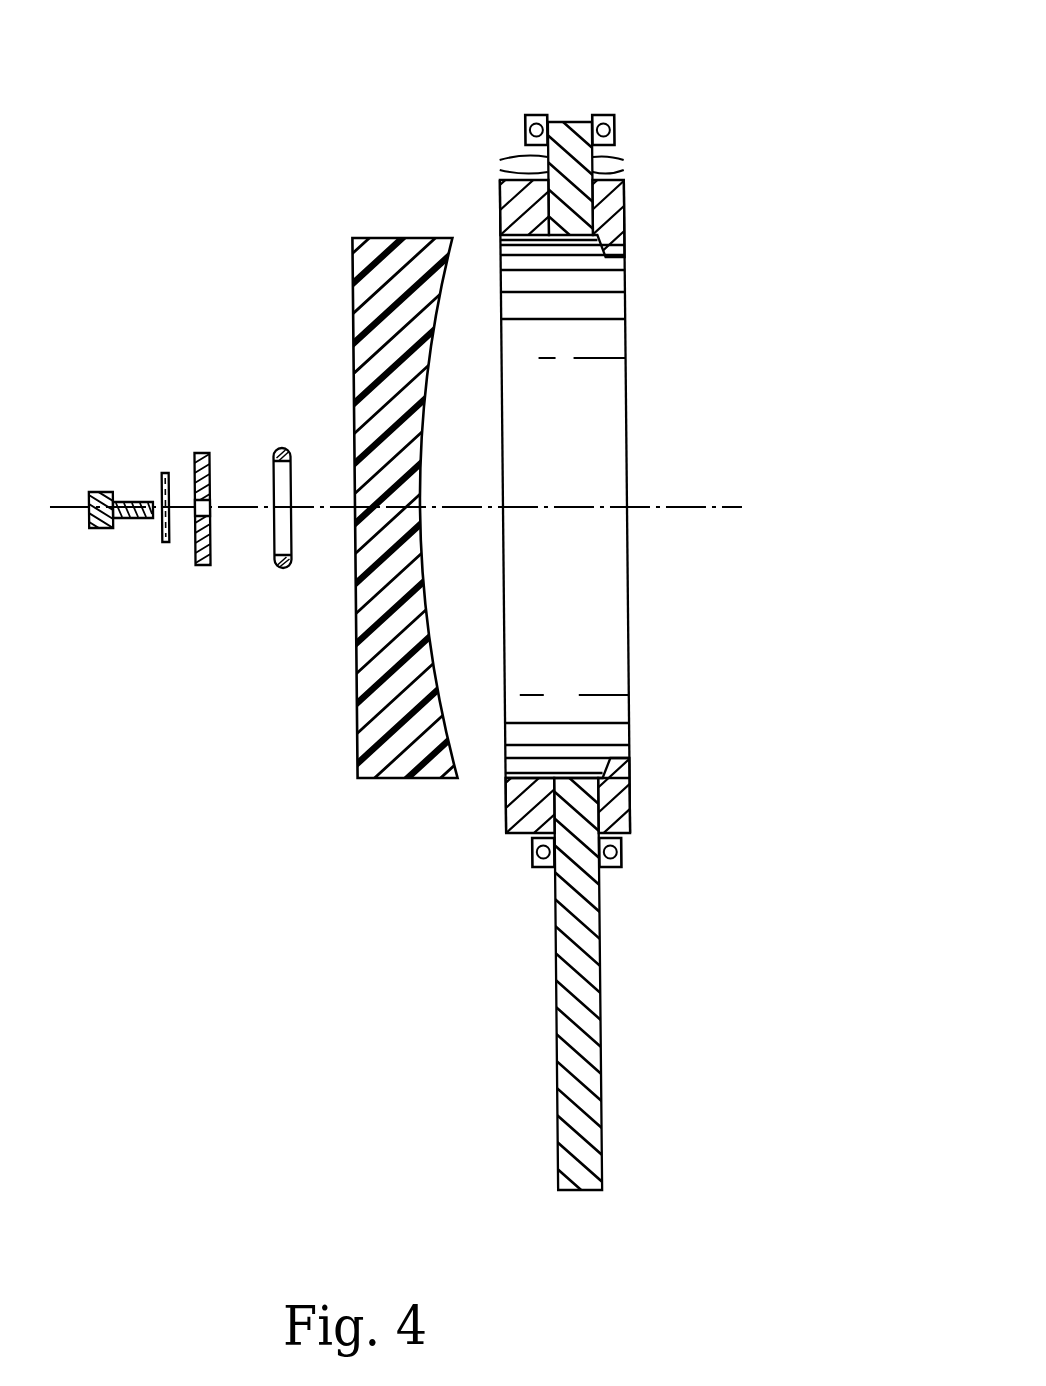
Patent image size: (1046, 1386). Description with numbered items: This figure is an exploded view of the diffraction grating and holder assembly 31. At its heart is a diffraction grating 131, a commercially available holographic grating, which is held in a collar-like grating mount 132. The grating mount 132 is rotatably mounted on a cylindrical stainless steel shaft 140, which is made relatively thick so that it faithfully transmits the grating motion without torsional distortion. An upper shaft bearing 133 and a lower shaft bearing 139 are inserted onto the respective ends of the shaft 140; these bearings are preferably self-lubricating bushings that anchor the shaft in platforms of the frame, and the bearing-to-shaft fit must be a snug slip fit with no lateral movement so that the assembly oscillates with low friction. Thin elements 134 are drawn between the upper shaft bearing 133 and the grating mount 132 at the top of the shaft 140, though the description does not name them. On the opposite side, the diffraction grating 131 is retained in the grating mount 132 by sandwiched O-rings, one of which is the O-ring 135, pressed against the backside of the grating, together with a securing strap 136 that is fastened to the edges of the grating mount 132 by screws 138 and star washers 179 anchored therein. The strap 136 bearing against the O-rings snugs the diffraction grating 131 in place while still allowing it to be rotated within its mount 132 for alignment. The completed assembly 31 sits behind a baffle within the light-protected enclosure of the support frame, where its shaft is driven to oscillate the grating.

The diffraction grating and holder assembly 31 is at (156, 193).
The diffraction grating 131 is at (405, 233).
The grating mount 132 is at (500, 196).
The upper shaft bearing 133 is at (525, 112).
The shim 134 is at (626, 153).
The O-ring 135 is at (279, 450).
The securing strap 136 is at (186, 450).
The screw 138 is at (103, 527).
The star washer 179 is at (165, 543).
The lower shaft bearing 139 is at (527, 858).
The shaft 140 is at (598, 932).